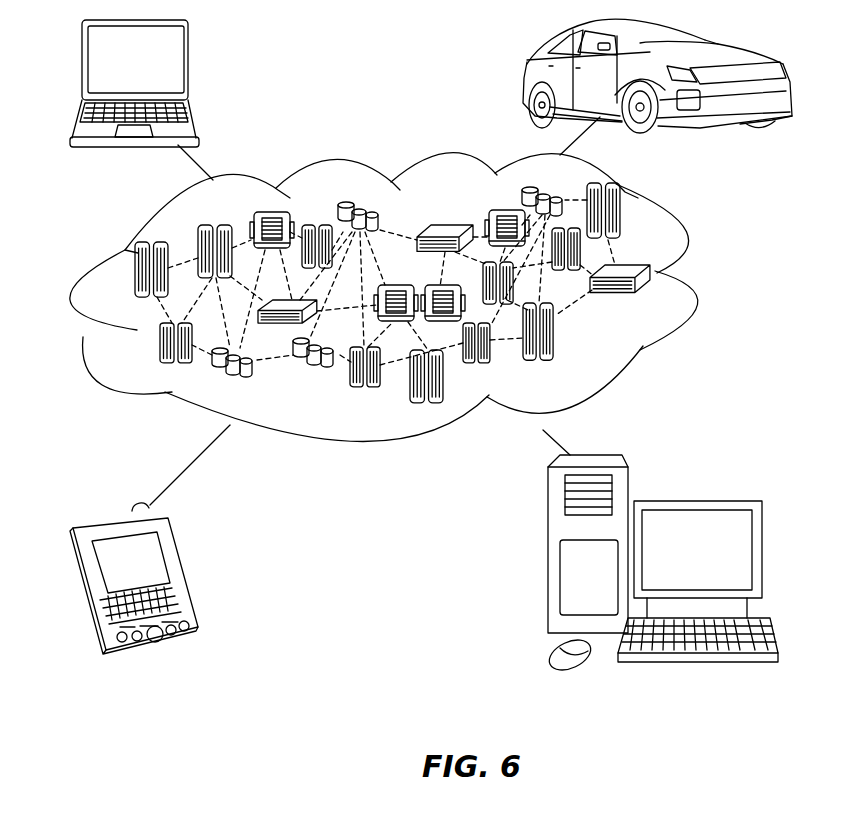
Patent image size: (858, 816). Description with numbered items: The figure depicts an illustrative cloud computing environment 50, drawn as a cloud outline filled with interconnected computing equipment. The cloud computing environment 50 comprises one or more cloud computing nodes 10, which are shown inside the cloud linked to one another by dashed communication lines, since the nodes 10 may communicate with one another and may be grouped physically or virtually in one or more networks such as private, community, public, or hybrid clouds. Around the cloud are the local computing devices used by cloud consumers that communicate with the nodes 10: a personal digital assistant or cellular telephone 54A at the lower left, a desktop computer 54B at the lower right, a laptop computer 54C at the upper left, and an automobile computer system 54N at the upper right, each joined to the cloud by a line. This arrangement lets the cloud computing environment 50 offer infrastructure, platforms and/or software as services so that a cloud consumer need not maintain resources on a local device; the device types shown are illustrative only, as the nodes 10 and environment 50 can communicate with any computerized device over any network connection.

The cloud computing nodes 10 is at (650, 303).
The cloud computing environment 50 is at (692, 281).
The personal digital assistant or cellular telephone 54A is at (183, 577).
The desktop computer 54B is at (695, 500).
The laptop computer 54C is at (188, 66).
The automobile computer system 54N is at (528, 79).